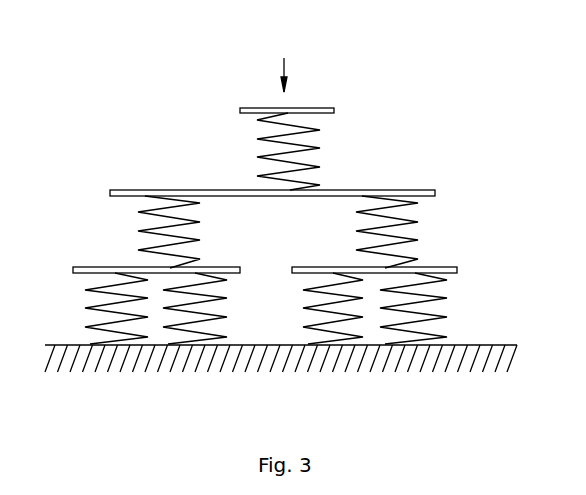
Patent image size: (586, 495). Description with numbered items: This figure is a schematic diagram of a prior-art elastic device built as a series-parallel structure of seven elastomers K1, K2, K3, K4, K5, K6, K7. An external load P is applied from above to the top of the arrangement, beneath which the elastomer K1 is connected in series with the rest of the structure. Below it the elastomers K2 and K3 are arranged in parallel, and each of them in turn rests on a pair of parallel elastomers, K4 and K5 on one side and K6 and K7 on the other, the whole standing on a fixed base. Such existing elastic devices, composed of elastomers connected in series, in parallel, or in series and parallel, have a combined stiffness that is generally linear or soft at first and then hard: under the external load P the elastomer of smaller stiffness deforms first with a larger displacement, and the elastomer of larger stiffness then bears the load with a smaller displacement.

The external load P is at (297, 66).
The elastomer K1 is at (308, 151).
The elastomer K2 is at (132, 232).
The elastomer K3 is at (402, 232).
The elastomer K4 is at (116, 340).
The elastomer K5 is at (195, 340).
The elastomer K6 is at (333, 340).
The elastomer K7 is at (413, 340).